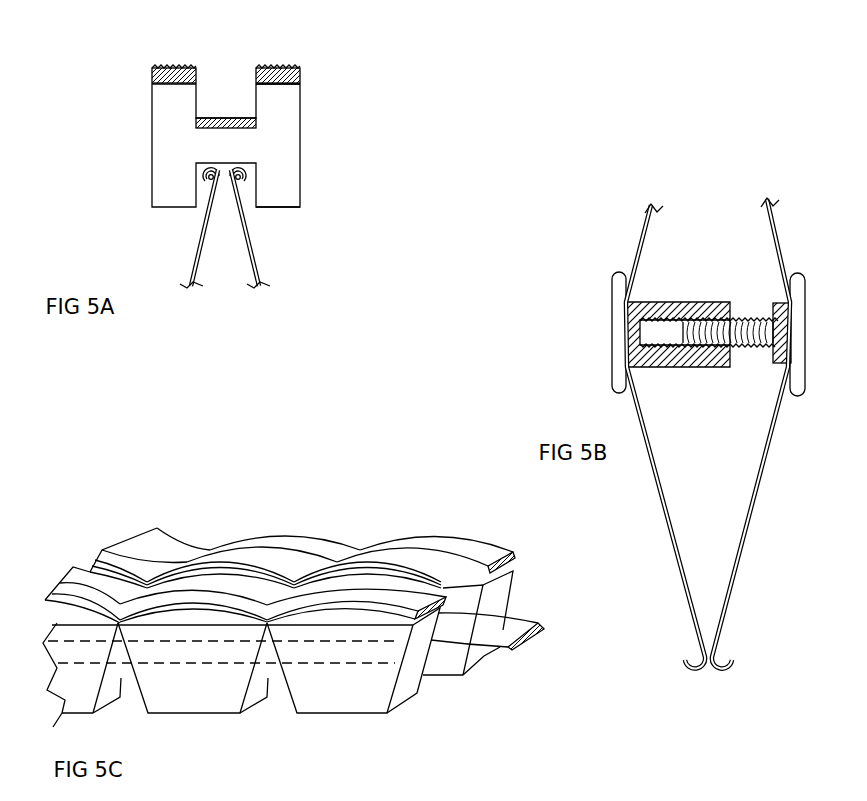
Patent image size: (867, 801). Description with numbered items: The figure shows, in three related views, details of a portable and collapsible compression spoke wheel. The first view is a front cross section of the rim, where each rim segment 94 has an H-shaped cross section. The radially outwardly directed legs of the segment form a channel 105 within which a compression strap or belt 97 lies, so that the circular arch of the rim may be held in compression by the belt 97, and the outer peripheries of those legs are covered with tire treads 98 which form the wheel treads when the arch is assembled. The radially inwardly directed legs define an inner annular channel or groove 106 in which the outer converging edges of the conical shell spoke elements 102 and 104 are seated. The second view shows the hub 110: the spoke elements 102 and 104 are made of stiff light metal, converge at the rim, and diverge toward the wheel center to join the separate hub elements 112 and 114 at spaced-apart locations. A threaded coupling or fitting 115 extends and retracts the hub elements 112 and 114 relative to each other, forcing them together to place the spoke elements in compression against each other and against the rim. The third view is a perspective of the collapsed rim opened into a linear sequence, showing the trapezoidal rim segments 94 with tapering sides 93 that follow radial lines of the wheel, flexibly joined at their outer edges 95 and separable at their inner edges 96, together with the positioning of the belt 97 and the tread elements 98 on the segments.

In FIG. 5C, the tapering sides 93 is at (287, 690).
In FIG. 5A, the rim segment 94 is at (151, 135).
In FIG. 5C, the rim segment 94 is at (236, 668).
In FIG. 5A, the outer edges 95 is at (299, 84).
In FIG. 5C, the outer edges 95 is at (122, 662).
In FIG. 5A, the inner edges 96 is at (289, 207).
In FIG. 5C, the inner edges 96 is at (242, 716).
In FIG. 5A, the compression strap or belt 97 is at (257, 124).
In FIG. 5C, the compression strap or belt 97 is at (516, 624).
In FIG. 5A, the tire treads 98 is at (192, 66).
In FIG. 5C, the tire treads 98 is at (247, 557).
In FIG. 5A, the conical shell spoke element 102 is at (257, 259).
In FIG. 5B, the conical shell spoke element 102 is at (775, 241).
In FIG. 5A, the conical shell spoke element 104 is at (203, 243).
In FIG. 5B, the conical shell spoke element 104 is at (645, 226).
In FIG. 5A, the channel 105 is at (230, 90).
In FIG. 5A, the inner annular channel or groove 106 is at (185, 183).
In FIG. 5B, the hub 110 is at (577, 343).
In FIG. 5B, the hub element 112 is at (798, 334).
In FIG. 5B, the hub element 114 is at (618, 373).
In FIG. 5B, the threaded coupling or fitting 115 is at (745, 303).